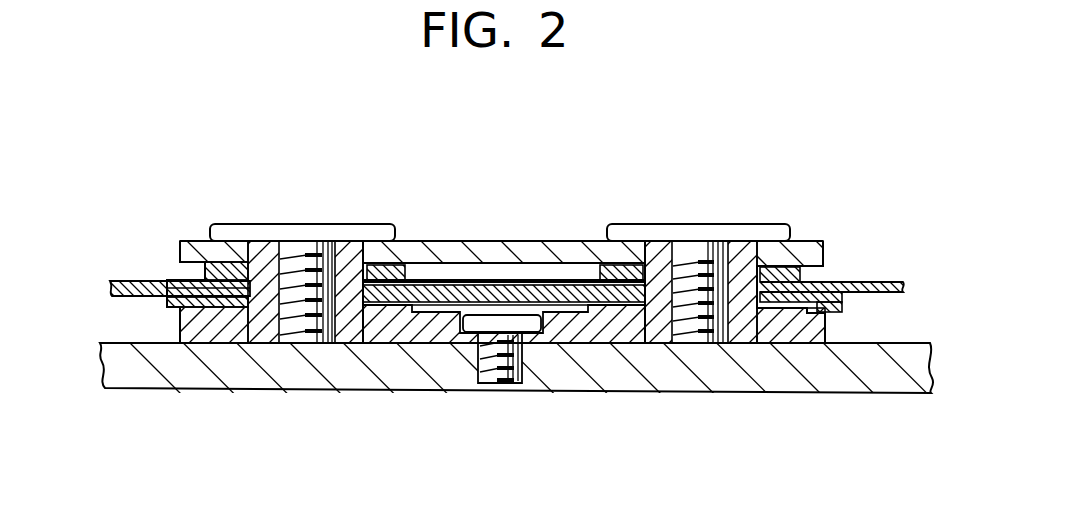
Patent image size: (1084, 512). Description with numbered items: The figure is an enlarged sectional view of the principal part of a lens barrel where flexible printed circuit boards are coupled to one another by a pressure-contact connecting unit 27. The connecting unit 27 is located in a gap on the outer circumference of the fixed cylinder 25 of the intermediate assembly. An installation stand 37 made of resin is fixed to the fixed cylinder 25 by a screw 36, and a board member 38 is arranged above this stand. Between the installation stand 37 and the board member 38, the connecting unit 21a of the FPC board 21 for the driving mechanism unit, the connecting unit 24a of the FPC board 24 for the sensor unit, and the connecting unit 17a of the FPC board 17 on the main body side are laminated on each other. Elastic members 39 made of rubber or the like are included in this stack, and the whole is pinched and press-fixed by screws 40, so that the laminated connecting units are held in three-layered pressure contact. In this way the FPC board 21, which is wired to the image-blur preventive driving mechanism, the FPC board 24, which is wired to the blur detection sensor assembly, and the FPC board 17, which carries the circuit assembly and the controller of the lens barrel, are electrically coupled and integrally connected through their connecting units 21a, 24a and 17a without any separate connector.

The FPC board on the main body side 17 is at (128, 281).
The connecting unit of the FPC board on the main body side 17a is at (188, 294).
The FPC board for the driving mechanism unit 21 is at (840, 317).
The connecting unit of the FPC board for the driving mechanism 21a is at (384, 302).
The FPC board for the sensor unit 24 is at (852, 283).
The connecting unit of the FPC board for the sensor unit 24a is at (586, 284).
The fixed cylinder 25 is at (796, 388).
The connecting unit 27 is at (743, 200).
The screw 36 is at (502, 384).
The installation stand 37 is at (638, 345).
The board member 38 is at (503, 250).
The elastic member 39 is at (385, 275).
The screw 40 is at (302, 232).